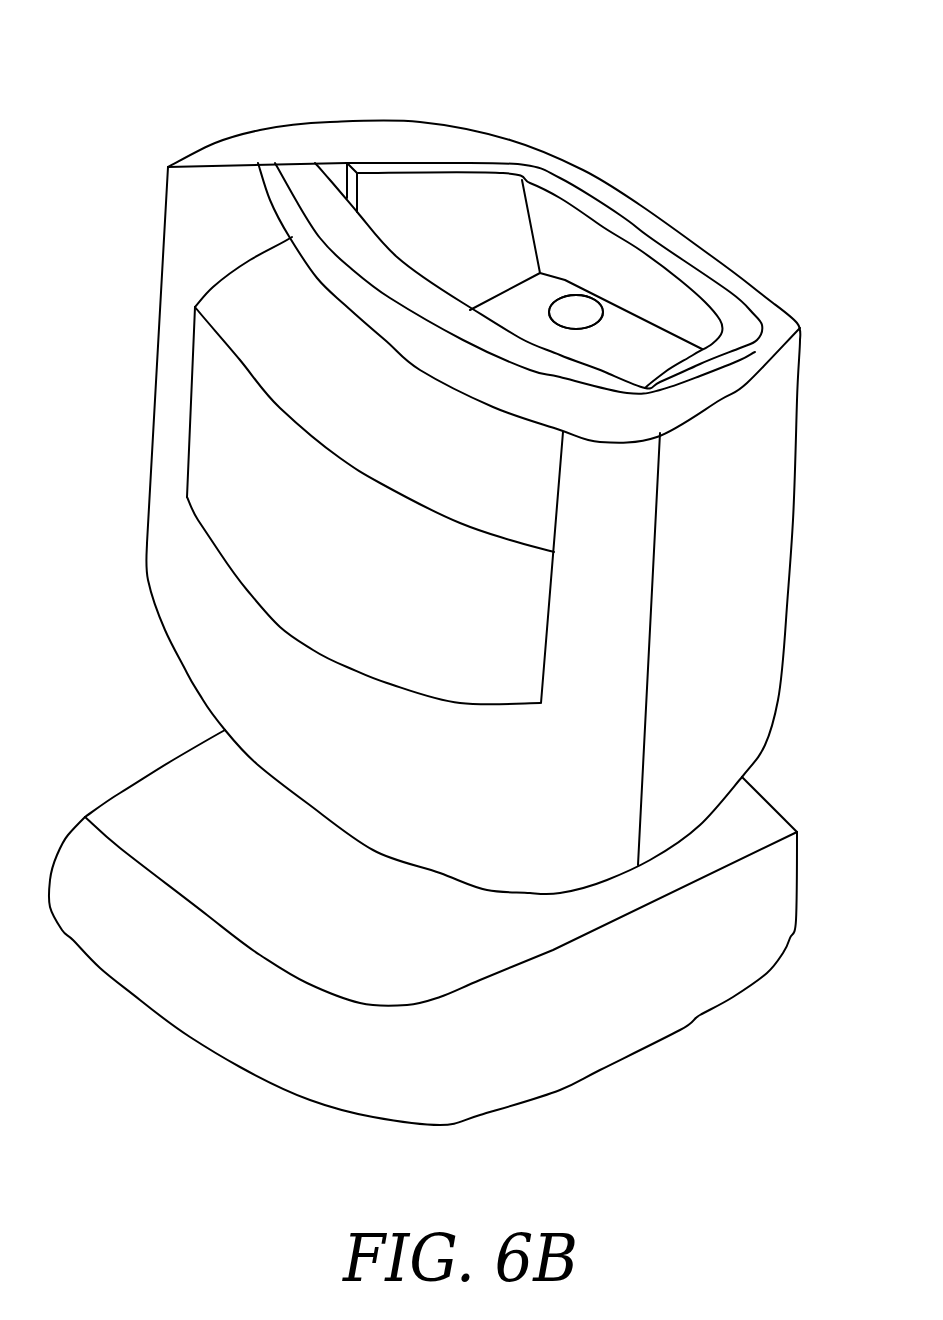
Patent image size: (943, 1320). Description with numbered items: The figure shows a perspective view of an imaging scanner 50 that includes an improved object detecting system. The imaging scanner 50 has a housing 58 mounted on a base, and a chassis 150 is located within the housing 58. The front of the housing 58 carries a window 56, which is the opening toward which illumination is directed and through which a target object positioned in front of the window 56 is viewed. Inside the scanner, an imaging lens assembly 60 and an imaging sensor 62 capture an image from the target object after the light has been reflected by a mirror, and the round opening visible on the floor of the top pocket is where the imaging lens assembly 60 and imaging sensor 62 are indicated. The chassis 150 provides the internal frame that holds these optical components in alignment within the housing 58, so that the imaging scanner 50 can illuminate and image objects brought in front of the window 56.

The imaging scanner 50 is at (140, 69).
The window 56 is at (347, 265).
The housing 58 is at (787, 630).
The imaging lens assembly 60 is at (575, 312).
The imaging sensor 62 is at (575, 312).
The chassis 150 is at (750, 285).